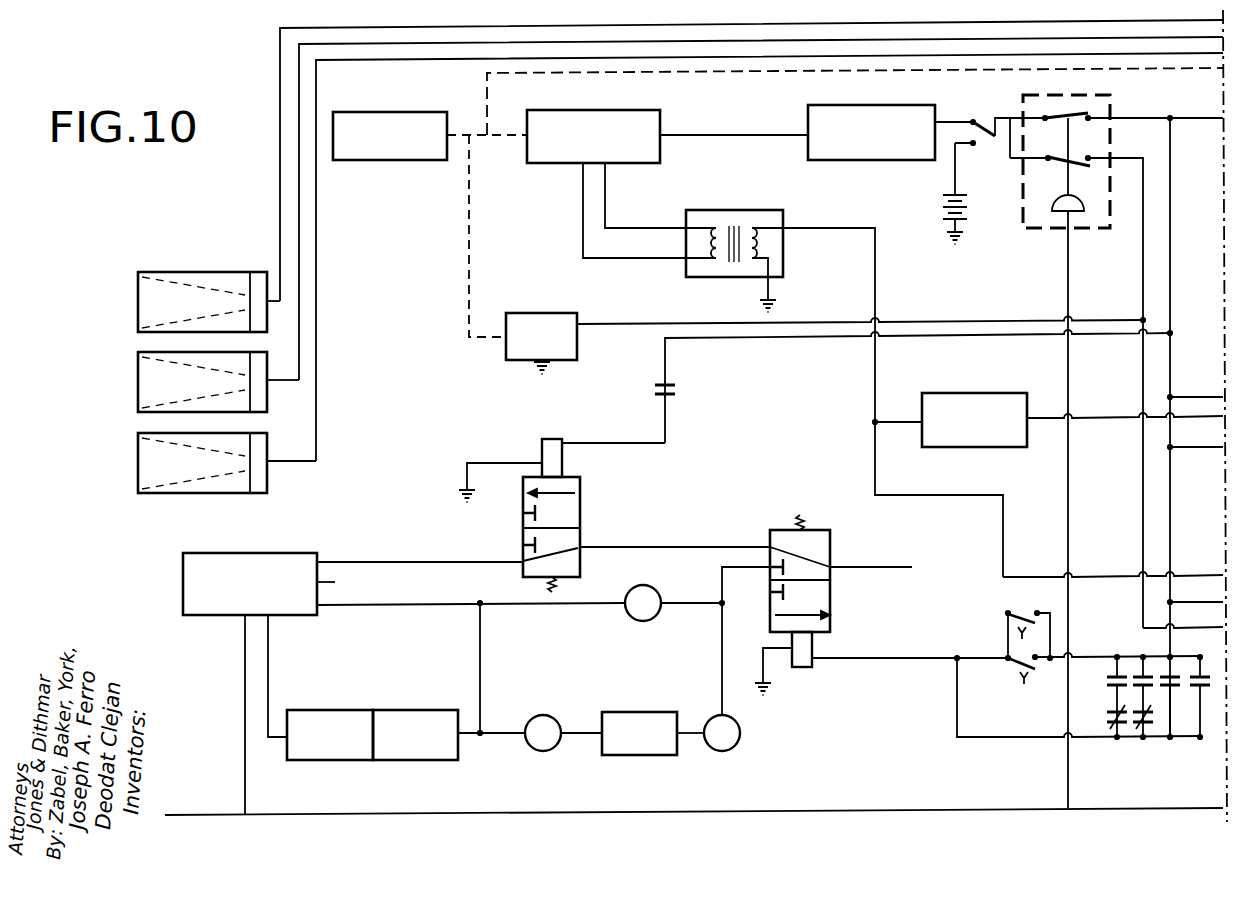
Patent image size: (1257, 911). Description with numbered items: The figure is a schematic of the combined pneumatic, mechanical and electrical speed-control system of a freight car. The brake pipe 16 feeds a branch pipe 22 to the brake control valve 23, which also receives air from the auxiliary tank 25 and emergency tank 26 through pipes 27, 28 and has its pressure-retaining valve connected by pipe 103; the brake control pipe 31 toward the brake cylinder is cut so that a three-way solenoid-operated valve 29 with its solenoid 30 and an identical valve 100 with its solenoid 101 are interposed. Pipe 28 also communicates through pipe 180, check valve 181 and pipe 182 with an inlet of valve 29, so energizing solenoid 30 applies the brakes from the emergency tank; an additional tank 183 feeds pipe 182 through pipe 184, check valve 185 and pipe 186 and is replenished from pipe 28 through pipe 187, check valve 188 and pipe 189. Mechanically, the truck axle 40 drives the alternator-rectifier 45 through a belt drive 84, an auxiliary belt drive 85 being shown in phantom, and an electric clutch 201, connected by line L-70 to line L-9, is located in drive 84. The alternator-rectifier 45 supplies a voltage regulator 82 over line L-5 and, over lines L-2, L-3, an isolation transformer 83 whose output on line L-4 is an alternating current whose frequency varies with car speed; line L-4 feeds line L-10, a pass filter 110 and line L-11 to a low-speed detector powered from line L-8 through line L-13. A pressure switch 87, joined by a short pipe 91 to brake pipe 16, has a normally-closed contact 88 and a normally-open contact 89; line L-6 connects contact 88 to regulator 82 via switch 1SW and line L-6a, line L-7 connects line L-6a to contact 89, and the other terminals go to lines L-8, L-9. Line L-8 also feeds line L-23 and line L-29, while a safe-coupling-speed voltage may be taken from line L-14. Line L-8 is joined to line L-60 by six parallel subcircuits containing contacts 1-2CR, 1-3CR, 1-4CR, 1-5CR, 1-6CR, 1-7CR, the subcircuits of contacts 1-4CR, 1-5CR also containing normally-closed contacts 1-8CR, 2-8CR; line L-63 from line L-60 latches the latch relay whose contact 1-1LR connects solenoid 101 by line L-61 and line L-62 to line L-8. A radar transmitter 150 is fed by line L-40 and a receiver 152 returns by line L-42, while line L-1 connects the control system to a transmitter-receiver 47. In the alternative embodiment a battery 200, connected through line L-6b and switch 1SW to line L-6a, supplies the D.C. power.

The brake pipe 16 is at (425, 813).
The branch pipe 22 is at (245, 649).
The brake control valve 23 is at (290, 553).
The auxiliary tank 25 is at (325, 710).
The emergency tank 26 is at (420, 710).
The pipe 27 is at (270, 645).
The pipe 28 is at (480, 629).
The solenoid-operated valve 29 is at (832, 596).
The solenoid 30 is at (814, 643).
The brake control pipe 31 is at (388, 562).
The truck axle 40 is at (392, 112).
The alternator-rectifier 45 is at (605, 110).
The transmitter-receiver 47 is at (143, 459).
The voltage regulator 82 is at (890, 105).
The isolation transformer 83 is at (786, 263).
The belt drive 84 is at (505, 140).
The auxiliary belt drive 85 is at (487, 88).
The pressure switch 87 is at (1028, 95).
The normally-closed contact 88 is at (1080, 113).
The normally-open contact 89 is at (1050, 162).
The short pipe 91 is at (1068, 266).
The solenoid-operated valve 100 is at (581, 500).
The solenoid 101 is at (553, 439).
The pipe 103 is at (335, 582).
The pass filter 110 is at (1003, 393).
The radar transmitter 150 is at (138, 299).
The receiver 152 is at (138, 379).
The pipe 180 is at (560, 604).
The check valve 181 is at (656, 590).
The pipe 182 is at (722, 600).
The third tank 183 is at (638, 712).
The pipe 184 is at (692, 733).
The check valve 185 is at (741, 739).
The pipe 186 is at (720, 646).
The pipe 187 is at (500, 733).
The check valve 188 is at (540, 752).
The pipe 189 is at (566, 733).
The battery 200 is at (942, 206).
The electric clutch 201 is at (558, 347).
The switch 1SW is at (985, 138).
The normally-open contact 1-1LR is at (675, 379).
The normally-open time-closing contact 1-2CR is at (1013, 610).
The normally-open time-closing contact 1-3CR is at (1019, 678).
The normally-open contact 1-4CR is at (1116, 672).
The normally-open contact 1-5CR is at (1142, 670).
The normally-open contact 1-6CR is at (1180, 690).
The normally-open contact 1-7CR is at (1200, 674).
The normally-closed contact 1-8CR is at (1118, 738).
The normally-closed contact 2-8CR is at (1146, 740).
The line L-1 is at (316, 190).
The line L-2 is at (583, 213).
The line L-3 is at (605, 200).
The line L-4 is at (875, 283).
The line L-5 is at (727, 135).
The line L-6 is at (948, 122).
The line L-6a is at (1014, 109).
The line L-6b is at (955, 160).
The line L-7 is at (1010, 160).
The line L-8 is at (1170, 139).
The line L-9 is at (1143, 259).
The line L-10 is at (900, 422).
The line L-11 is at (1103, 420).
The line L-13 is at (1185, 397).
The line L-14 is at (1180, 118).
The line L-23 is at (1205, 447).
The line L-29 is at (1178, 602).
The line L-40 is at (280, 236).
The line L-42 is at (299, 211).
The line L-60 is at (940, 680).
The line L-61 is at (670, 419).
The line L-62 is at (786, 338).
The line L-63 is at (1204, 724).
The line L-70 is at (665, 325).